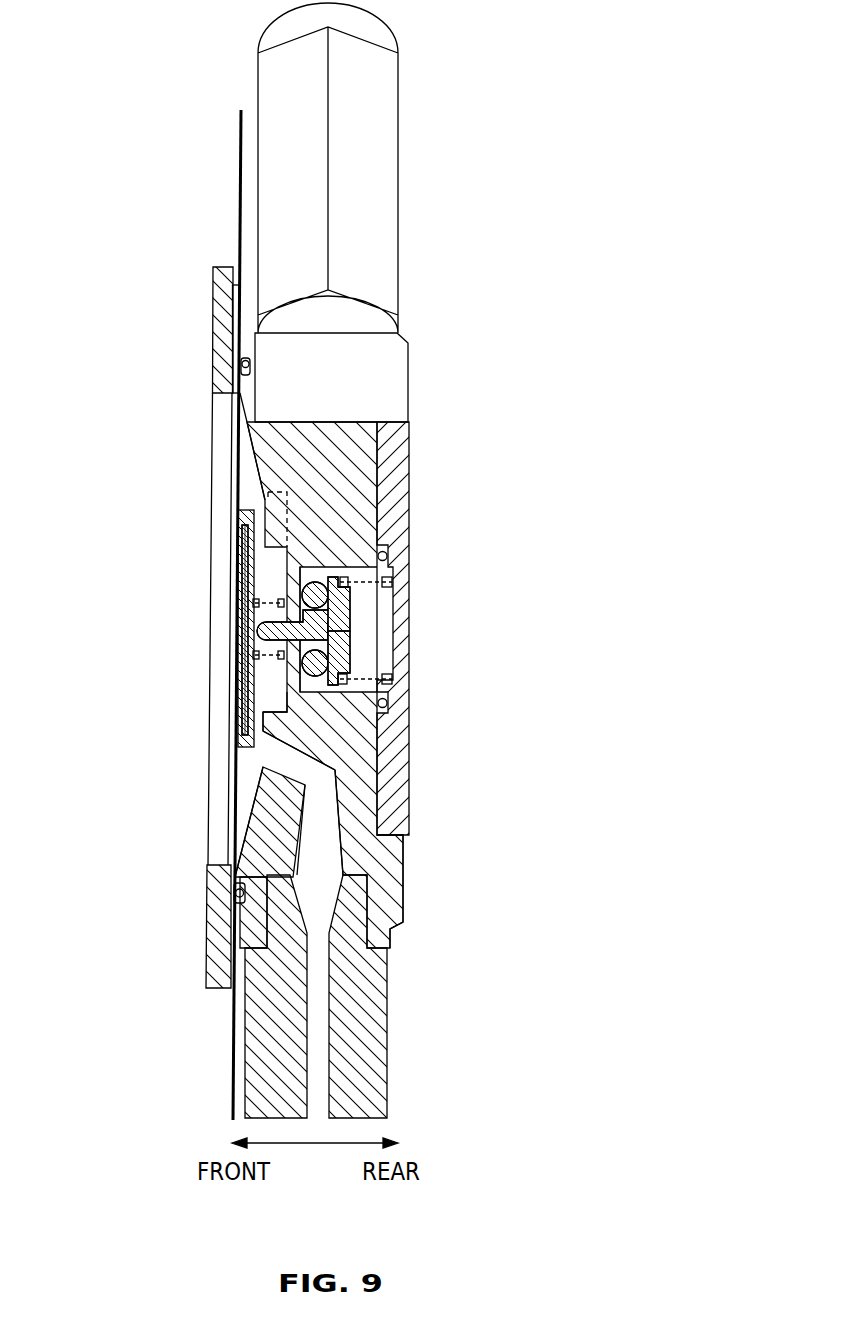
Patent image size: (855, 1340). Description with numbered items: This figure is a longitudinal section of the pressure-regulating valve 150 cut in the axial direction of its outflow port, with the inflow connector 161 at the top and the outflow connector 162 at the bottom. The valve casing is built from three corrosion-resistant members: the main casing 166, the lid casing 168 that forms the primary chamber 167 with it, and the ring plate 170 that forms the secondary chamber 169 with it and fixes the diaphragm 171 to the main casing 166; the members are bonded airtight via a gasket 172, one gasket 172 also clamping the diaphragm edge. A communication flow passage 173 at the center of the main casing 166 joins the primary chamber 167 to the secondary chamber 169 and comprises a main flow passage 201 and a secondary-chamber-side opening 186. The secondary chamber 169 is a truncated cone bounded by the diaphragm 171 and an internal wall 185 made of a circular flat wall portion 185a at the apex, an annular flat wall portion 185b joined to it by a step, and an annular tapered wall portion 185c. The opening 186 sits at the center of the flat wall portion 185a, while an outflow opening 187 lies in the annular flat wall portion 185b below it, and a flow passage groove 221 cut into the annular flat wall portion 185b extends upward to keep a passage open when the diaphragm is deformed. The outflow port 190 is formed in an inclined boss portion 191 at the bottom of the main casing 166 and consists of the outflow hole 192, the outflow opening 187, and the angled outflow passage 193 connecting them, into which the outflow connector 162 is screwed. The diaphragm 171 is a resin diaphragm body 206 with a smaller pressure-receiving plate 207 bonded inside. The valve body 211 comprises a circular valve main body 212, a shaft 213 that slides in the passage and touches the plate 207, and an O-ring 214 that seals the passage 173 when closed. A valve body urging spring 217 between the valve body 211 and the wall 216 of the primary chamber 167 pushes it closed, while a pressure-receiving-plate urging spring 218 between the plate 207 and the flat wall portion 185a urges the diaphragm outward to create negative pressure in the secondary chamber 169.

The pressure-regulating valve 150 is at (470, 342).
The inflow connector 161 is at (382, 177).
The outflow connector 162 is at (367, 1073).
The main casing 166 is at (415, 380).
The primary chamber 167 is at (360, 597).
The lid casing 168 is at (415, 802).
The secondary chamber 169 is at (245, 415).
The ring plate 170 is at (198, 960).
The diaphragm 171 is at (175, 618).
The gasket 172 is at (241, 362).
The communication flow passage 173 is at (209, 606).
The internal wall 185 is at (157, 783).
The flat wall portion 185a is at (285, 690).
The annular flat wall portion 185b is at (262, 722).
The annular tapered wall portion 185c is at (252, 808).
The secondary-chamber-side opening 186 is at (285, 624).
The outflow opening 187 is at (263, 750).
The outflow port 190 is at (415, 883).
The inclined boss portion 191 is at (395, 847).
The outflow hole 192 is at (327, 847).
The outflow passage 193 is at (288, 763).
The main flow passage 201 is at (300, 585).
The diaphragm body 206 is at (238, 517).
The pressure-receiving plate 207 is at (244, 531).
The valve body 211 is at (427, 631).
The valve main body 212 is at (352, 620).
The shaft 213 is at (336, 676).
The O-ring 214 is at (302, 575).
The wall of the primary chamber 216 is at (393, 680).
The valve body urging spring 217 is at (395, 582).
The pressure-receiving-plate urging spring 218 is at (298, 665).
The flow passage groove 221 is at (270, 497).